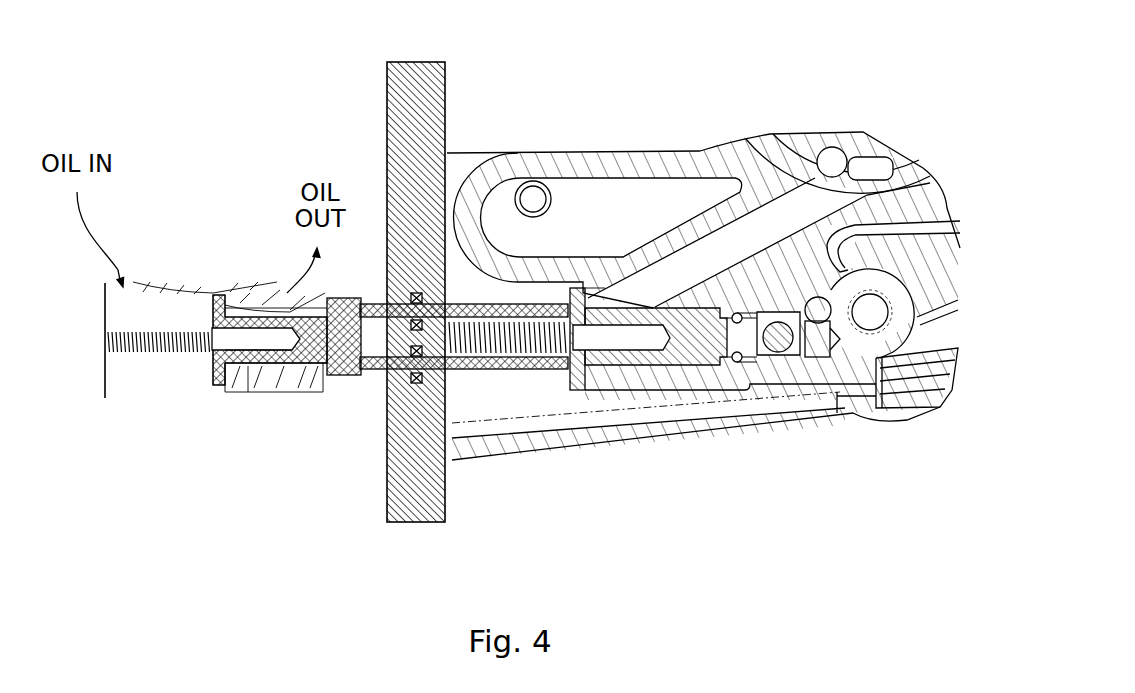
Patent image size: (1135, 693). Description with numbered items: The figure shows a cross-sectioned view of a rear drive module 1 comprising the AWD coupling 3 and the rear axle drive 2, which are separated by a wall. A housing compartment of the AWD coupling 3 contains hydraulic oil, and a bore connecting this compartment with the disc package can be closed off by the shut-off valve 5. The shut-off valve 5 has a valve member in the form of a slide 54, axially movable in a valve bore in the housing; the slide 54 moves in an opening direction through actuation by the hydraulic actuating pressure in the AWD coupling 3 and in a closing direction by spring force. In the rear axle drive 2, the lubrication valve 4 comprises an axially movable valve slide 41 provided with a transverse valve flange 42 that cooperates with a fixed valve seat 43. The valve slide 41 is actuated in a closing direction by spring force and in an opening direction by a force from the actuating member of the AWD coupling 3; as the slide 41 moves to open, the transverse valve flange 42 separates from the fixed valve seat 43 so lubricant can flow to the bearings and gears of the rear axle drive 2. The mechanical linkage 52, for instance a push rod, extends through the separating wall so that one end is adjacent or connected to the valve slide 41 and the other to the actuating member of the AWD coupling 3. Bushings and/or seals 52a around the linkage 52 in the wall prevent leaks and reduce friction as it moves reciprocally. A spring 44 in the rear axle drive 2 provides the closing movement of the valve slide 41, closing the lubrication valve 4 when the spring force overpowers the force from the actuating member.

The rear drive module 1 is at (480, 110).
The rear axle drive 2 is at (211, 243).
The AWD coupling 3 is at (830, 96).
The lubrication valve 4 is at (265, 384).
The valve slide 41 is at (240, 357).
The transverse valve flange 42 is at (213, 373).
The fixed valve seat 43 is at (230, 385).
The spring 44 is at (135, 340).
The shut-off valve 5 is at (699, 394).
The mechanical linkage 52 is at (483, 363).
The bushings and/or seals 52a is at (414, 392).
The valve slide 54 is at (620, 355).